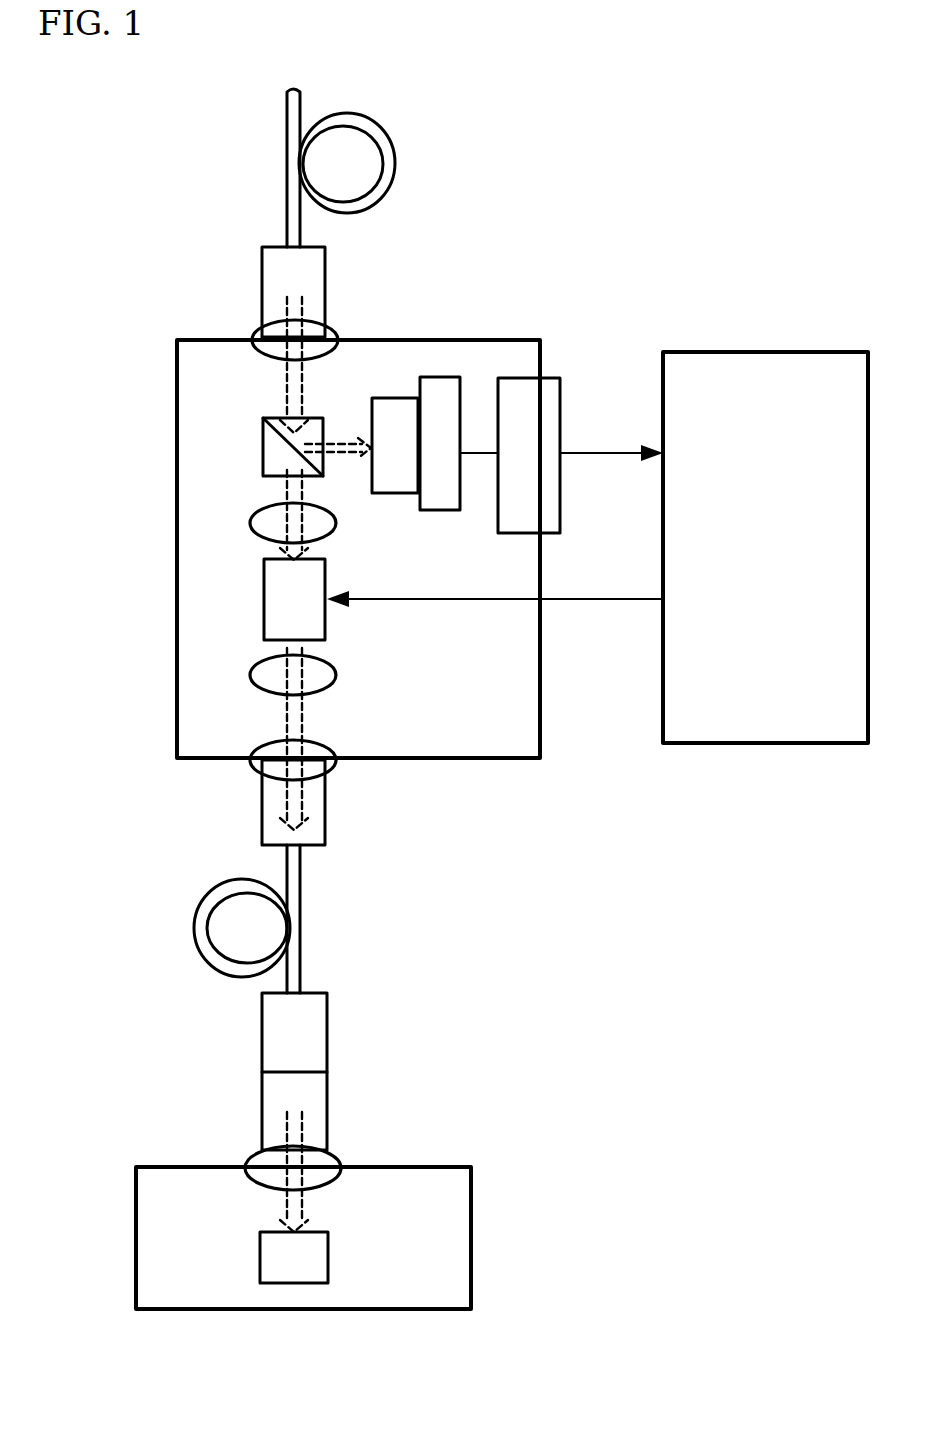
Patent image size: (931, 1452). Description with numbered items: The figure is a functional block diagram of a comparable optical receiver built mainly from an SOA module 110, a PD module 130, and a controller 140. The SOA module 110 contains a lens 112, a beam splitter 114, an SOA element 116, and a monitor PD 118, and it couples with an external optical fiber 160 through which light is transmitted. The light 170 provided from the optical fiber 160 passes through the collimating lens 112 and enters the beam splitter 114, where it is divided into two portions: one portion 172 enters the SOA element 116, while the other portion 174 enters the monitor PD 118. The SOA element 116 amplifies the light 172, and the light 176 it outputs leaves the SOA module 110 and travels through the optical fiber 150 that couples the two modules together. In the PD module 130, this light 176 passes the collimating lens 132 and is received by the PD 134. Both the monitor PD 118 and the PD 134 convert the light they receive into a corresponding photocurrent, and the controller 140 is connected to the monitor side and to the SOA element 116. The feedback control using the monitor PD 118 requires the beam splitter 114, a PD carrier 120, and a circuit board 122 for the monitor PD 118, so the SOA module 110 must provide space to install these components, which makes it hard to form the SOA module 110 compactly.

The SOA module 110 is at (176, 370).
The lens 112 is at (262, 333).
The beam splitter 114 is at (262, 436).
The SOA element 116 is at (263, 598).
The monitor PD 118 is at (397, 398).
The PD carrier 120 is at (440, 377).
The circuit board 122 is at (560, 378).
The PD module 130 is at (136, 1210).
The lens 132 is at (255, 1162).
The PD 134 is at (260, 1255).
The controller 140 is at (768, 352).
The optical fiber 150 is at (302, 923).
The external optical fiber 160 is at (290, 158).
The light 170 is at (285, 388).
The portion of the light 172 is at (288, 488).
The other portion of the light 174 is at (352, 440).
The output light 176 is at (287, 717).